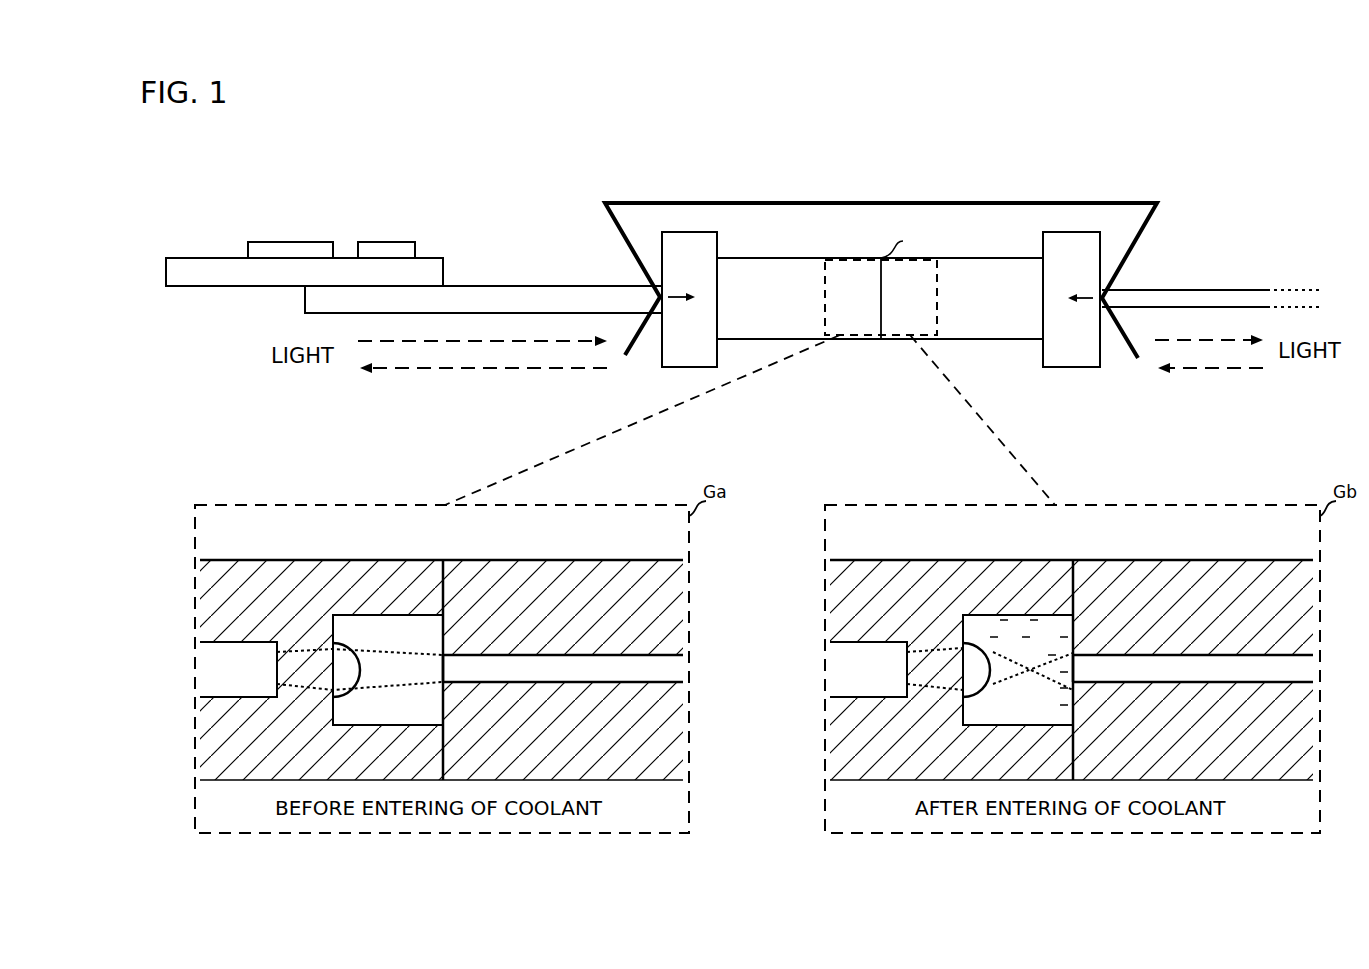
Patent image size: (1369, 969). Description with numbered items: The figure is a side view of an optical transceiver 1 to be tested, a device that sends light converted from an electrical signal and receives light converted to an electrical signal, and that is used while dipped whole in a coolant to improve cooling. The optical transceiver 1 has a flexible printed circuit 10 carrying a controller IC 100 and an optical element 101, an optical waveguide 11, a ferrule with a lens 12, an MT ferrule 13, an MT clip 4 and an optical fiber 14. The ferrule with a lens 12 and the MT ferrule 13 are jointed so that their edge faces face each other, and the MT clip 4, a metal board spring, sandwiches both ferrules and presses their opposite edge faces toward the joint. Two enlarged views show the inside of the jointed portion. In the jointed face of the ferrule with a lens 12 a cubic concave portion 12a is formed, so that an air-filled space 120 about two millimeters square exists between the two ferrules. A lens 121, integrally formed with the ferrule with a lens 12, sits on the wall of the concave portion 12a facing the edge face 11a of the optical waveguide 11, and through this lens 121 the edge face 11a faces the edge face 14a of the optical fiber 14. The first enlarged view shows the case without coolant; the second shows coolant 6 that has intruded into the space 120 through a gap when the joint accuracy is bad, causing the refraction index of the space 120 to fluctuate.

The optical transceiver 1 is at (1218, 144).
The MT clip 4 is at (1130, 203).
The FPC 10 is at (428, 258).
The controller IC 100 is at (305, 242).
The optical element 101 is at (390, 242).
The optical waveguide 11 is at (522, 286).
The edge face of the optical waveguide 11a is at (283, 643).
The ferrule with a lens 12 is at (773, 258).
The concave portion 12a is at (336, 643).
The space 120 is at (404, 712).
The lens 121 is at (446, 614).
The MT ferrule 13 is at (963, 258).
The optical fiber 14 is at (1236, 290).
The edge face of the optical fiber 14a is at (451, 652).
The coolant 6 is at (997, 707).